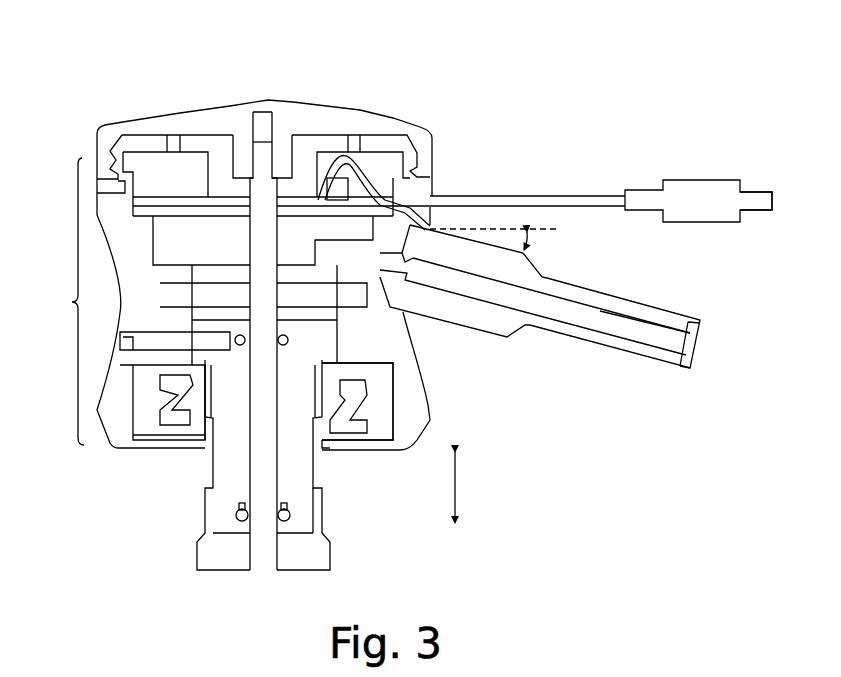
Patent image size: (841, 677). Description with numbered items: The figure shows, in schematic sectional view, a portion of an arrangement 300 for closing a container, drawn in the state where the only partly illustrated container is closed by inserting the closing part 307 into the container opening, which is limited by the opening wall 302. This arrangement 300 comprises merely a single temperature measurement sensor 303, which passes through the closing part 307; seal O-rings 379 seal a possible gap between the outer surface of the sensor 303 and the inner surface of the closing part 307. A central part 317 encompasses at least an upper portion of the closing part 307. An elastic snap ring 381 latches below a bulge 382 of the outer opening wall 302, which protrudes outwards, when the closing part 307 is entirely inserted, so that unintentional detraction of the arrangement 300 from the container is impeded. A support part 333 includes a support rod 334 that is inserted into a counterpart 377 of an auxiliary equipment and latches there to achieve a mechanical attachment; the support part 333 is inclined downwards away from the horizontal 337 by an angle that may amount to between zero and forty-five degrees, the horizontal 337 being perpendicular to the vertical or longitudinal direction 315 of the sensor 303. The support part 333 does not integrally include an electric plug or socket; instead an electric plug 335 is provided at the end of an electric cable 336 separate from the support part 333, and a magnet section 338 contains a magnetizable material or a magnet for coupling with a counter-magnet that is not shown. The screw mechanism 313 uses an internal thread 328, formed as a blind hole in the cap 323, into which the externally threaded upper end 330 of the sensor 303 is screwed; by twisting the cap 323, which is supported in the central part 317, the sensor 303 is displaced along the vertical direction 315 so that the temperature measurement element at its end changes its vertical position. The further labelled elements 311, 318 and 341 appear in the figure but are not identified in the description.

The arrangement for closing a container 300 is at (492, 108).
The opening wall 302 is at (323, 490).
The temperature measurement sensor 303 is at (260, 490).
The closing part 307 is at (300, 453).
The ball 311 is at (272, 533).
The screw mechanism 313 is at (180, 92).
The vertical direction 315 is at (456, 488).
The central part 317 is at (131, 303).
The tube wall 318 is at (312, 514).
The cap 323 is at (373, 127).
The internal thread 328 is at (263, 153).
The upper end of the temperature measurement sensor 330 is at (247, 142).
The support part 333 is at (556, 385).
The support rod 334 is at (650, 335).
The electric plug 335 is at (770, 190).
The electric cable 336 is at (590, 188).
The horizontal 337 is at (547, 232).
The magnet section 338 is at (705, 180).
The flexible tube 341 is at (430, 212).
The counterpart of an auxiliary equipment 377 is at (668, 315).
The seal O-rings 379 is at (238, 522).
The elastic snap ring 381 is at (190, 437).
The bulge 382 is at (198, 395).